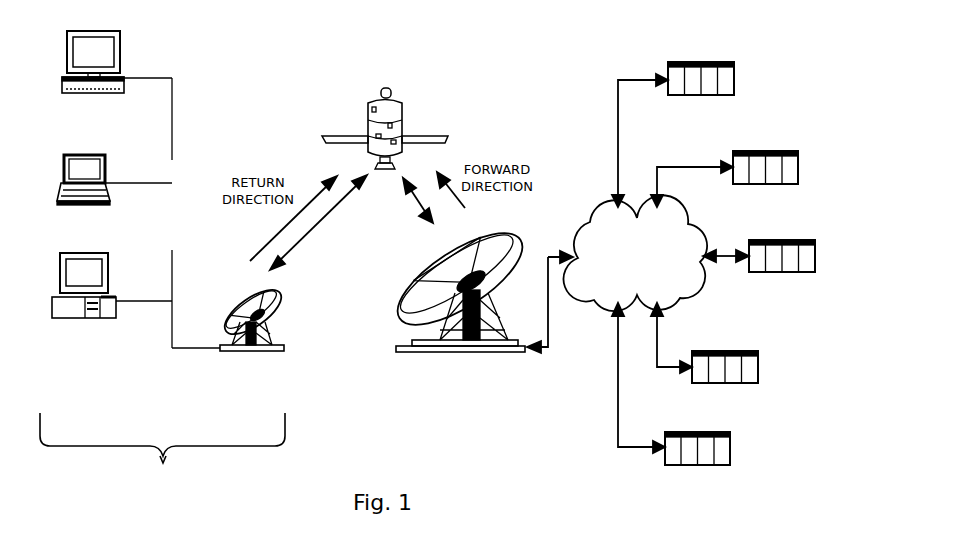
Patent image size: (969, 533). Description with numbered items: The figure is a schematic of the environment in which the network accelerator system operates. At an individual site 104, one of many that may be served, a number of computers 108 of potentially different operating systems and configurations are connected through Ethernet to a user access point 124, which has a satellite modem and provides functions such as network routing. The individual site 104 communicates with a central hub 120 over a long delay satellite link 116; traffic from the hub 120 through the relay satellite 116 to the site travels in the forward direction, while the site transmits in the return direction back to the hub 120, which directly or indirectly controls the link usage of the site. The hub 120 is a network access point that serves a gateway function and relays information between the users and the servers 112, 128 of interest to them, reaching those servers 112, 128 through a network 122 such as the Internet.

The individual site 104 is at (253, 492).
The computers 108 is at (120, 58).
The servers 112 is at (727, 87).
The satellite link 116 is at (447, 139).
The hub 120 is at (518, 241).
The network 122 is at (626, 288).
The user access point 124 is at (280, 312).
The server 128 is at (722, 455).